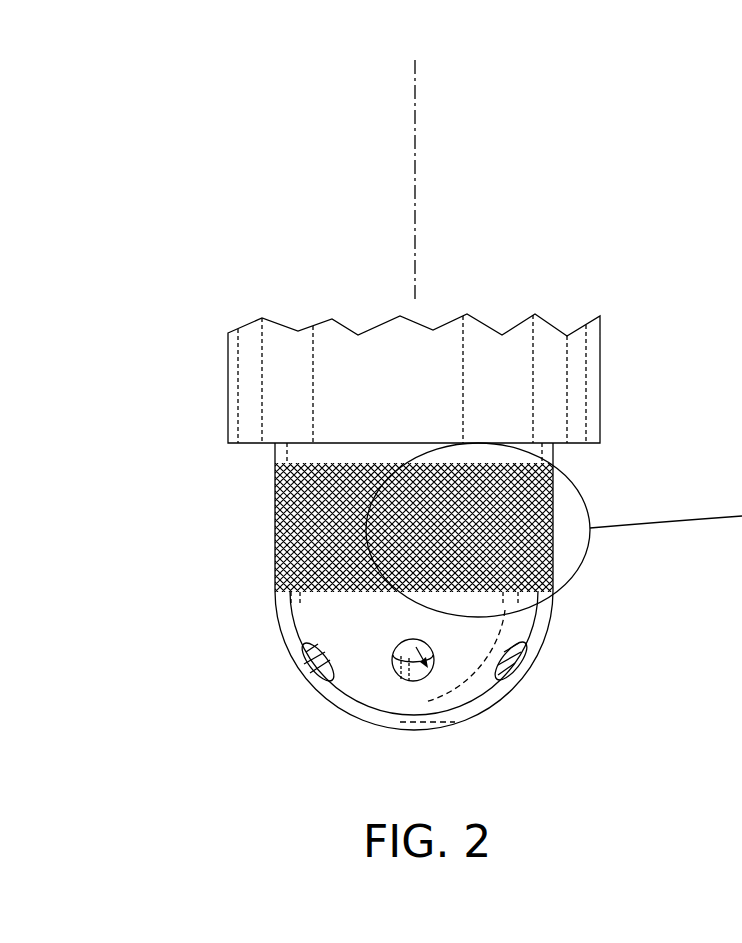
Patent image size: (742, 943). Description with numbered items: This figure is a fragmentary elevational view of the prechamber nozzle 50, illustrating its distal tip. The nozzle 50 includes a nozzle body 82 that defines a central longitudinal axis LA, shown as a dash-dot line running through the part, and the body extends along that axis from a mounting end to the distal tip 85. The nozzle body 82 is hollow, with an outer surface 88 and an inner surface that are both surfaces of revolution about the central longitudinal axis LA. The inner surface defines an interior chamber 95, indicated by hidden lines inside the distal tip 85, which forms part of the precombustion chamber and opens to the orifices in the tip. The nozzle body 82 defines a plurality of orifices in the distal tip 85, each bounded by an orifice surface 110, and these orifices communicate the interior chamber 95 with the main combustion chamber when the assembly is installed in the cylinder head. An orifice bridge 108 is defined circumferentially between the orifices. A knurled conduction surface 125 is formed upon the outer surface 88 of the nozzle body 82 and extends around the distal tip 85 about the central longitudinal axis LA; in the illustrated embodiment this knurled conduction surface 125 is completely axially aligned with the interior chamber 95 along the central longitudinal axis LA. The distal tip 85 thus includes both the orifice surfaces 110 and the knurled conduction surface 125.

The nozzle 50 is at (424, 521).
The nozzle body 82 is at (227, 388).
The outer surface 88 is at (392, 390).
The knurled conduction surface 125 is at (272, 522).
The distal tip 85 is at (273, 602).
The interior chamber 95 is at (465, 712).
The orifice bridge 108 is at (363, 670).
The orifice surface 110 is at (316, 683).
The central longitudinal axis LA is at (415, 148).